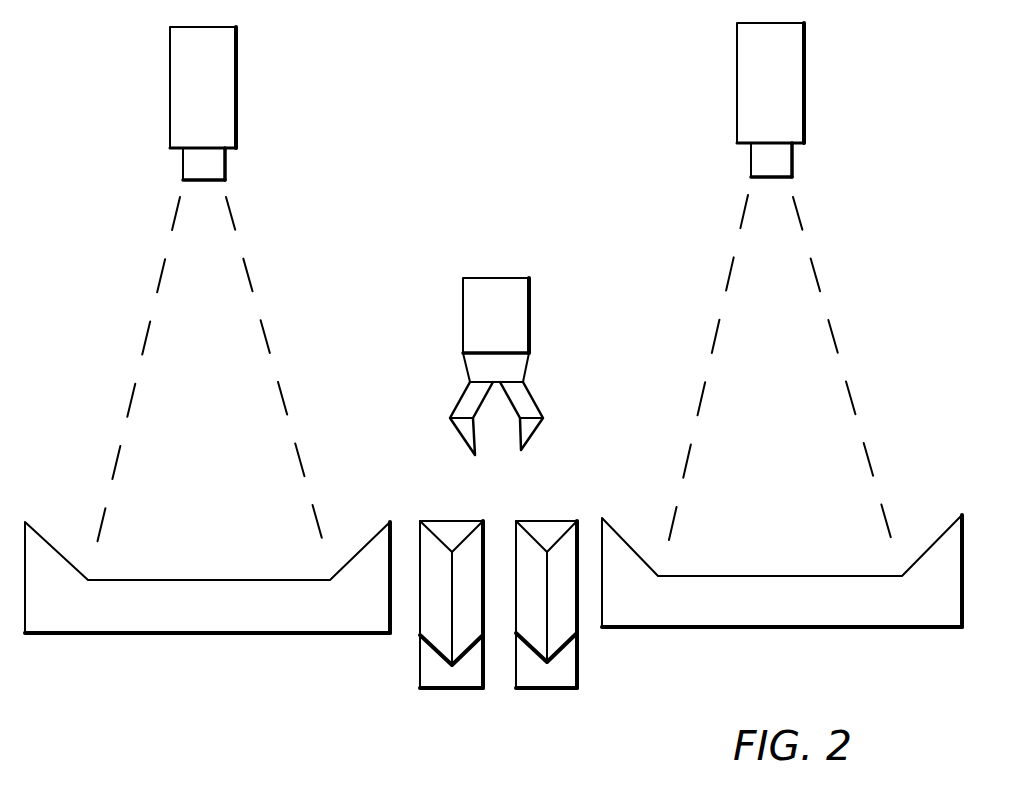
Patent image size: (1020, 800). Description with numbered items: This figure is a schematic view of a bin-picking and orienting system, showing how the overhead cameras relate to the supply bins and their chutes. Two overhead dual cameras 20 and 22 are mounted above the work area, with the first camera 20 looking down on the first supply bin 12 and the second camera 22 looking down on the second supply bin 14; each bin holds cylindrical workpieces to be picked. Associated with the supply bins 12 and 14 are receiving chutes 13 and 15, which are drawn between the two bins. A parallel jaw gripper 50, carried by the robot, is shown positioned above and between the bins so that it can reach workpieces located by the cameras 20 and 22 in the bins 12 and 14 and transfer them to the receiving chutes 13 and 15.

The camera 20 is at (236, 130).
The camera 22 is at (737, 118).
The parallel jaw gripper 50 is at (527, 340).
The supply bin 12 is at (318, 627).
The supply bin 14 is at (903, 615).
The receiving chute 13 is at (422, 673).
The receiving chute 15 is at (567, 675).